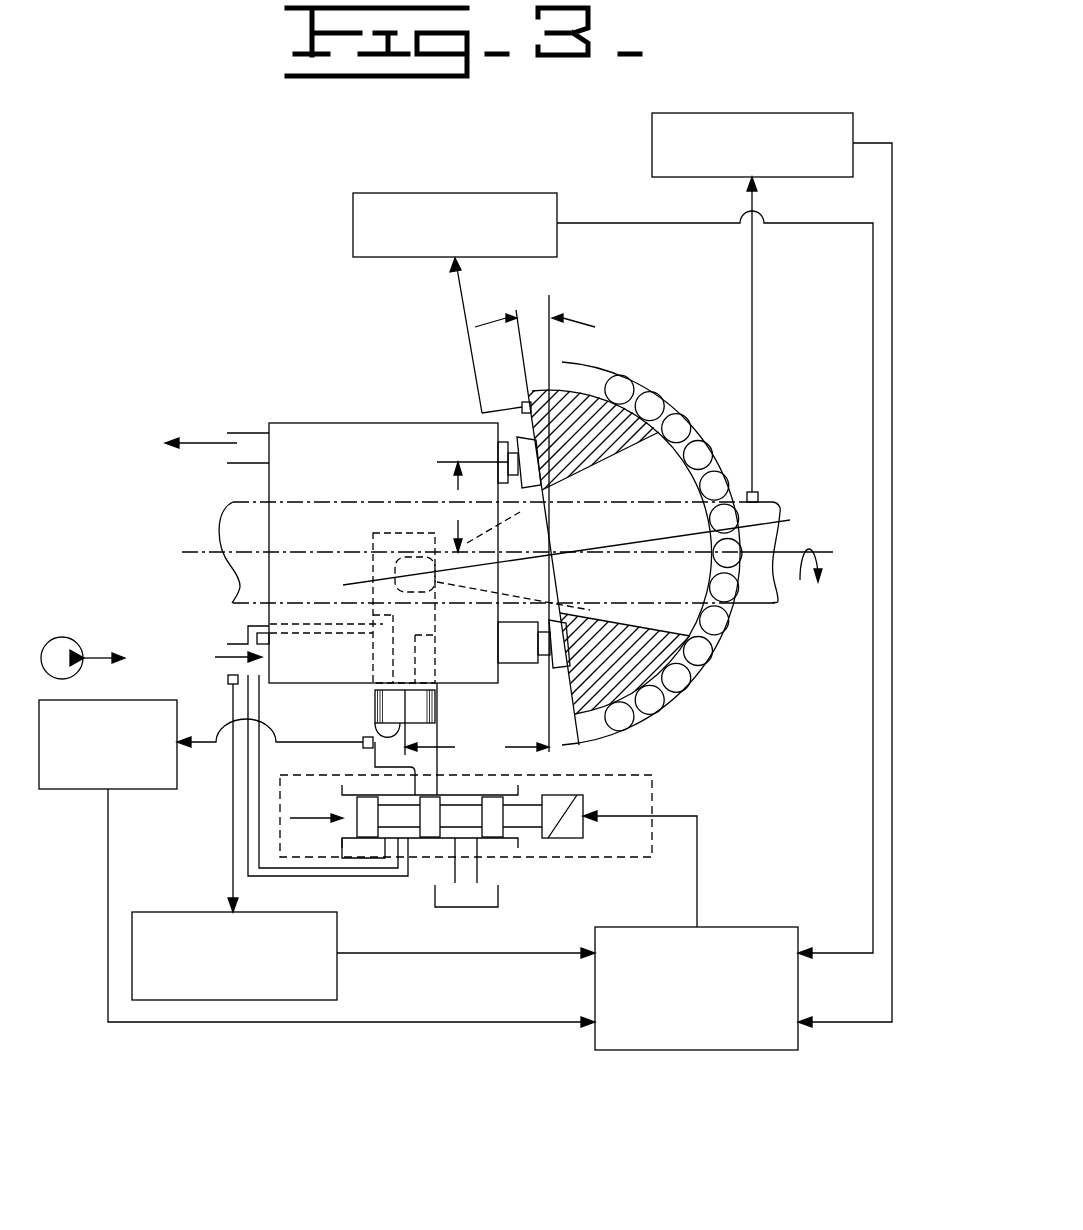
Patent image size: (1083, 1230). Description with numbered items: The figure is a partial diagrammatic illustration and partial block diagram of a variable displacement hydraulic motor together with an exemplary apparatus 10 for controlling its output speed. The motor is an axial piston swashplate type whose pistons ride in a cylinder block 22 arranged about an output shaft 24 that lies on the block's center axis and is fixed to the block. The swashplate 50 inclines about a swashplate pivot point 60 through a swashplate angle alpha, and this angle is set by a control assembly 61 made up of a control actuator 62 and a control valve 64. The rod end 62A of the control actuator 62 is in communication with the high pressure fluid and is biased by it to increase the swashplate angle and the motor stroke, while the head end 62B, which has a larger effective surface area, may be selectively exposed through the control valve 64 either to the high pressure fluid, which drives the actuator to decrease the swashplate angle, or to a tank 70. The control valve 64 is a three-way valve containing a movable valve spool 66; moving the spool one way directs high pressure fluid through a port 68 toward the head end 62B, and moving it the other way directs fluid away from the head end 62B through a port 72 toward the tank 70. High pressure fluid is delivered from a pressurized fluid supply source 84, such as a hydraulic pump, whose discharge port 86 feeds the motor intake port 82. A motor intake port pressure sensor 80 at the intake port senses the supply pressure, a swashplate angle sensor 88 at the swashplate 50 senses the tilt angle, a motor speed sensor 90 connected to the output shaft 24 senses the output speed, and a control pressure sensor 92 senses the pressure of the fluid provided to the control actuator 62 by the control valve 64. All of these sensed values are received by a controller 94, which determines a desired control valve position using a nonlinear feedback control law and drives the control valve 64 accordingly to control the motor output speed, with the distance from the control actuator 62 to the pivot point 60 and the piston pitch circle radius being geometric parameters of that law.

The method and apparatus for controlling output speed 10 is at (781, 907).
The cylinder block 22 is at (338, 423).
The output shaft 24 is at (772, 553).
The swashplate 50 is at (600, 368).
The swashplate pivot point 60 is at (554, 551).
The control assembly 61 is at (184, 861).
The control actuator 62 is at (415, 710).
The rod end 62A is at (386, 683).
The head end 62B is at (393, 738).
The control valve 64 is at (662, 782).
The valve spool 66 is at (357, 820).
The port 68 is at (425, 780).
The tank 70 is at (498, 890).
The port 72 is at (460, 858).
The motor intake port pressure sensor 80 is at (337, 965).
The motor intake port 82 is at (230, 645).
The pressurized fluid supply source 84 is at (57, 638).
The discharge port 86 is at (87, 652).
The swashplate angle sensor 88 is at (451, 193).
The motor speed sensor 90 is at (745, 113).
The control pressure sensor 92 is at (78, 791).
The controller 94 is at (657, 1050).